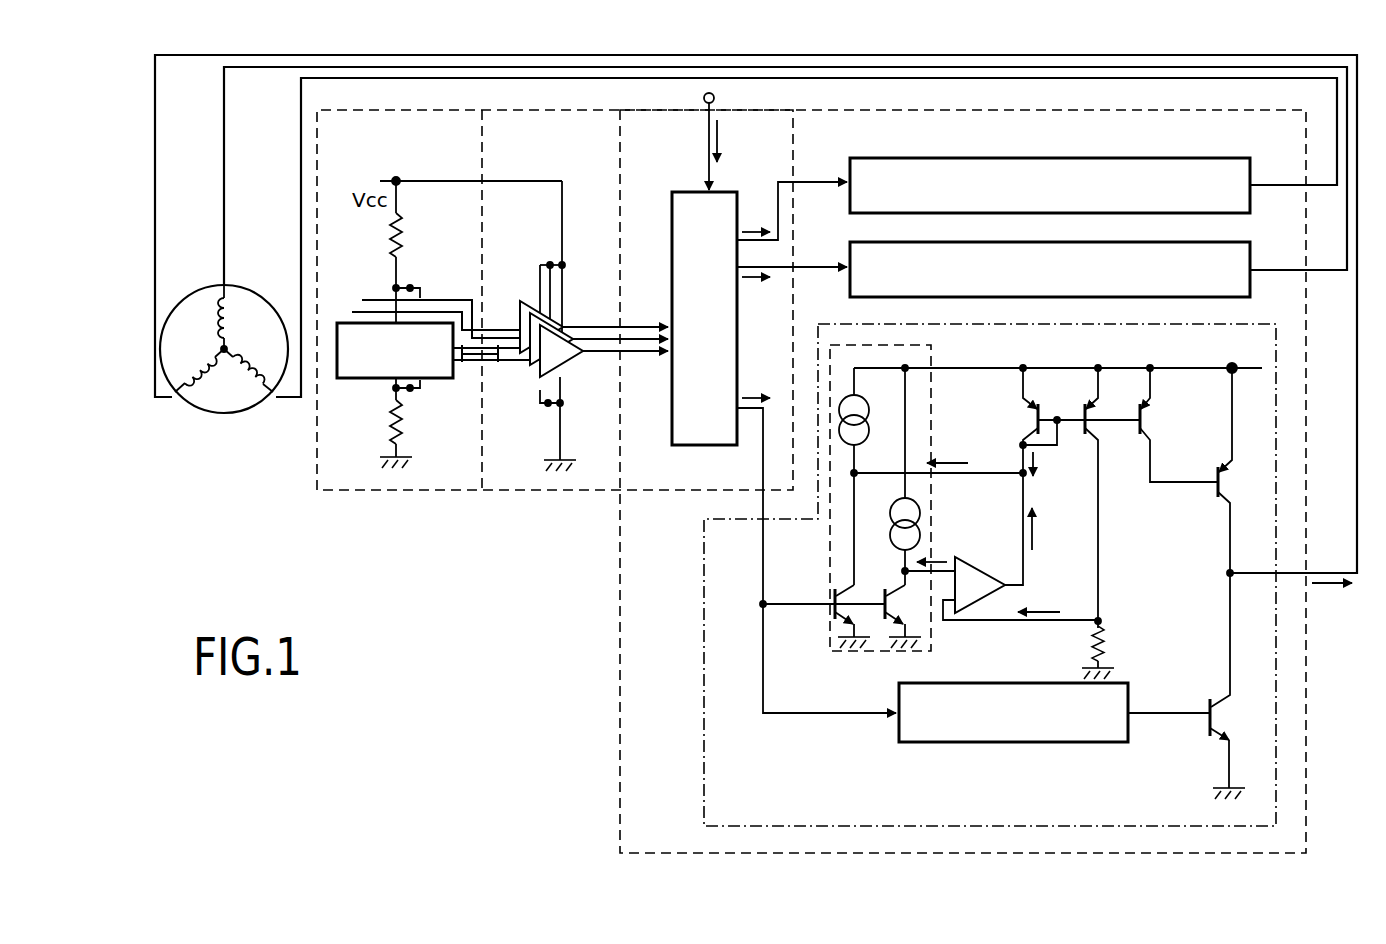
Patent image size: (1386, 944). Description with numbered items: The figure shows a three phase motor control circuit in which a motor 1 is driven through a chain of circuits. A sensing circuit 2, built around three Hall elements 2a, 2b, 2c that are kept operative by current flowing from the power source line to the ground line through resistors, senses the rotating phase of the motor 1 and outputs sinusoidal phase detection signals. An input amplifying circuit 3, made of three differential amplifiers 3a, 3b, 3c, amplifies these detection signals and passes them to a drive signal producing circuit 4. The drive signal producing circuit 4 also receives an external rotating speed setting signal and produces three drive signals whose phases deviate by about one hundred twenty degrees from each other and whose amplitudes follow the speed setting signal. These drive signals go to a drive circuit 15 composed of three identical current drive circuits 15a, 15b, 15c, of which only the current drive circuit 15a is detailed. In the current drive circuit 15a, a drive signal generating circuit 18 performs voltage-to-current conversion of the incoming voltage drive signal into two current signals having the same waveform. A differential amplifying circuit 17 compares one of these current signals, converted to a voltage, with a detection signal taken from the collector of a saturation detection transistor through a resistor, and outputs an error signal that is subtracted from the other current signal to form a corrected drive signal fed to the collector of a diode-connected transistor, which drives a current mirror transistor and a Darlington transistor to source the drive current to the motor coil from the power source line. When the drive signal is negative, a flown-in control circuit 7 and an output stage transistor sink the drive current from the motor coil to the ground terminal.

The motor 1 is at (200, 413).
The sensing circuit 2 is at (335, 490).
The Hall element 2a is at (352, 378).
The Hall element 2b is at (352, 310).
The Hall element 2c is at (370, 298).
The input amplifying circuit 3 is at (497, 490).
The differential amplifier 3a is at (540, 370).
The differential amplifier 3b is at (526, 315).
The differential amplifier 3c is at (522, 298).
The drive signal producing circuit 4 is at (690, 446).
The flown-in control circuit 7 is at (915, 743).
The drive circuit 15 is at (618, 570).
The current drive circuit 15a is at (704, 770).
The current drive circuit 15b is at (850, 246).
The current drive circuit 15c is at (852, 157).
The differential amplifying circuit 17 is at (986, 566).
The drive signal generating circuit 18 is at (828, 636).